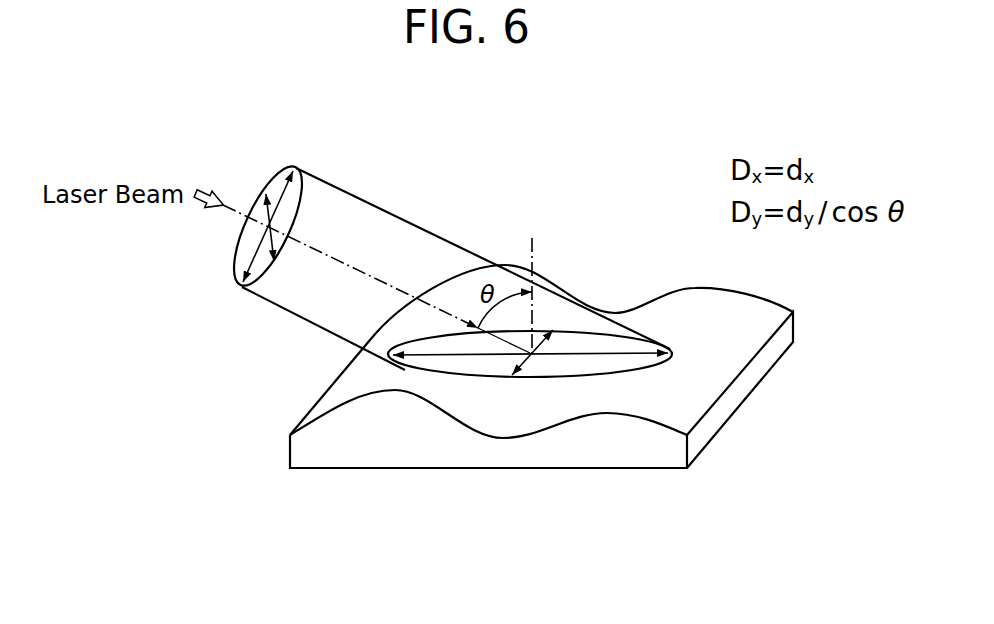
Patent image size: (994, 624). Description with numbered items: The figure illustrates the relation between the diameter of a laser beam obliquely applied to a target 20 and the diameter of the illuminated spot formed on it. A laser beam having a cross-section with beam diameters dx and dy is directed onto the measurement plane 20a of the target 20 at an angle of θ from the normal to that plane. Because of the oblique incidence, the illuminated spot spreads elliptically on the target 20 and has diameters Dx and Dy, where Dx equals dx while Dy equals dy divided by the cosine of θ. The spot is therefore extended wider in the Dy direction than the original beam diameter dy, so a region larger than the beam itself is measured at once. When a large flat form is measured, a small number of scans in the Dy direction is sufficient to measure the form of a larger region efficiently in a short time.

The target 20 is at (509, 484).
The measurement plane 20a is at (740, 327).
The beam diameter in x direction dx is at (257, 214).
The beam diameter in y direction dy is at (278, 212).
The illuminated spot diameter in x direction Dx is at (520, 369).
The illuminated spot diameter in y direction Dy is at (550, 356).